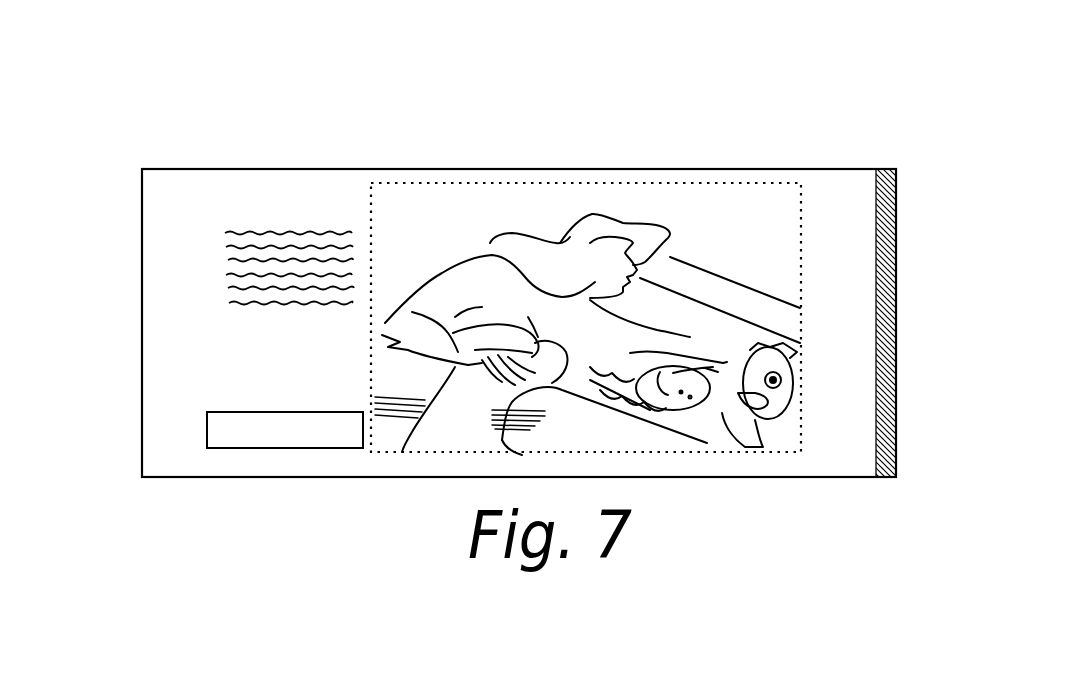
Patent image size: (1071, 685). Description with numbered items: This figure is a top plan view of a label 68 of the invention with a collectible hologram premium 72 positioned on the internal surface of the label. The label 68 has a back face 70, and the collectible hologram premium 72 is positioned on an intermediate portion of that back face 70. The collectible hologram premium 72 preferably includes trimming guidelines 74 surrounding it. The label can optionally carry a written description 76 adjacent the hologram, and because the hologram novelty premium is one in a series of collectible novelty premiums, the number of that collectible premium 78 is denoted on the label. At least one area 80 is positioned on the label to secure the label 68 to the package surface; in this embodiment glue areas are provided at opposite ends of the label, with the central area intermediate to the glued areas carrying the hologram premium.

The label 68 is at (323, 122).
The back face 70 is at (273, 210).
The collectible hologram premium 72 is at (713, 218).
The trimming guidelines 74 is at (601, 183).
The written description 76 is at (242, 283).
The number of the collectible premium 78 is at (217, 428).
The area 80 is at (887, 282).